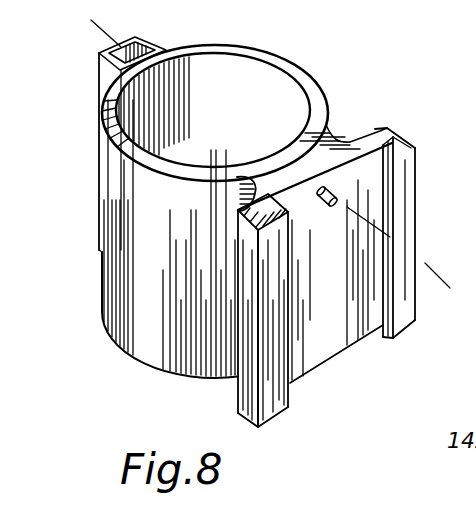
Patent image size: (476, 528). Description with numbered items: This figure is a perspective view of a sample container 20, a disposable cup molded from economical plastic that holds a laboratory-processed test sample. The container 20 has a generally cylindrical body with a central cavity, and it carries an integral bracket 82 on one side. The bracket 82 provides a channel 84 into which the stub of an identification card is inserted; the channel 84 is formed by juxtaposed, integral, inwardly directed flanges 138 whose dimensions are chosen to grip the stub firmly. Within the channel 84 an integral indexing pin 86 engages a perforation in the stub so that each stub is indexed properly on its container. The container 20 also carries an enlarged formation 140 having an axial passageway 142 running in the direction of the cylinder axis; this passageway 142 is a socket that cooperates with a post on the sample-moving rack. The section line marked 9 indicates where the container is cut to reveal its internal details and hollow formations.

The sample container 20 is at (317, 61).
The enlarged formation 140 is at (107, 78).
The axial passageway 142 is at (143, 42).
The integral bracket 82 is at (340, 150).
The channel 84 is at (366, 190).
The integral pin 86 is at (320, 208).
The inwardly directed flanges 138 is at (390, 275).
The section line 9- 9 is at (98, 34).